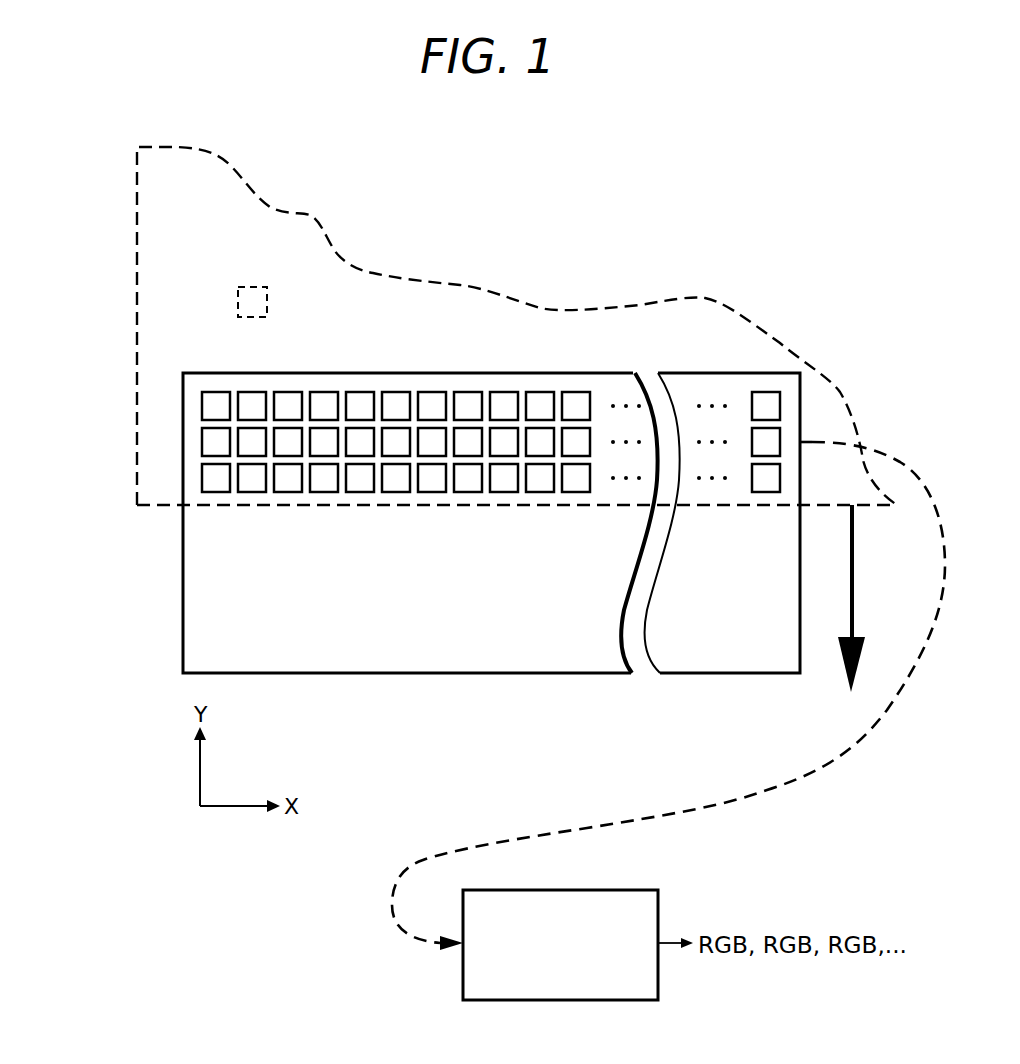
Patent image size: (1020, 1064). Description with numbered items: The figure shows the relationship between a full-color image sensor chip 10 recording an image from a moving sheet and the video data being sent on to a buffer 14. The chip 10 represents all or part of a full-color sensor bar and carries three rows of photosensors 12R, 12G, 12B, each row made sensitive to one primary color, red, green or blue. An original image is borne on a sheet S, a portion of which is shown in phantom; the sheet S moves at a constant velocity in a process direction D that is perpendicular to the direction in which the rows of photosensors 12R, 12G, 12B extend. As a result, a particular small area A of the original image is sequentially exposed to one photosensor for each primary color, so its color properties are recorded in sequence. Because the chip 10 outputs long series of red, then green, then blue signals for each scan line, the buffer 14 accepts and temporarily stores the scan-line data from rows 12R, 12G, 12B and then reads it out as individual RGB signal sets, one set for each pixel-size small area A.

The chip 10 is at (429, 664).
The row of photosensors (Red) 12R is at (192, 405).
The row of photosensors (Green) 12G is at (192, 442).
The row of photosensors (Blue) 12B is at (192, 478).
The buffer 14 is at (602, 890).
The small area A is at (248, 284).
The sheet S is at (753, 324).
The process direction D is at (853, 545).